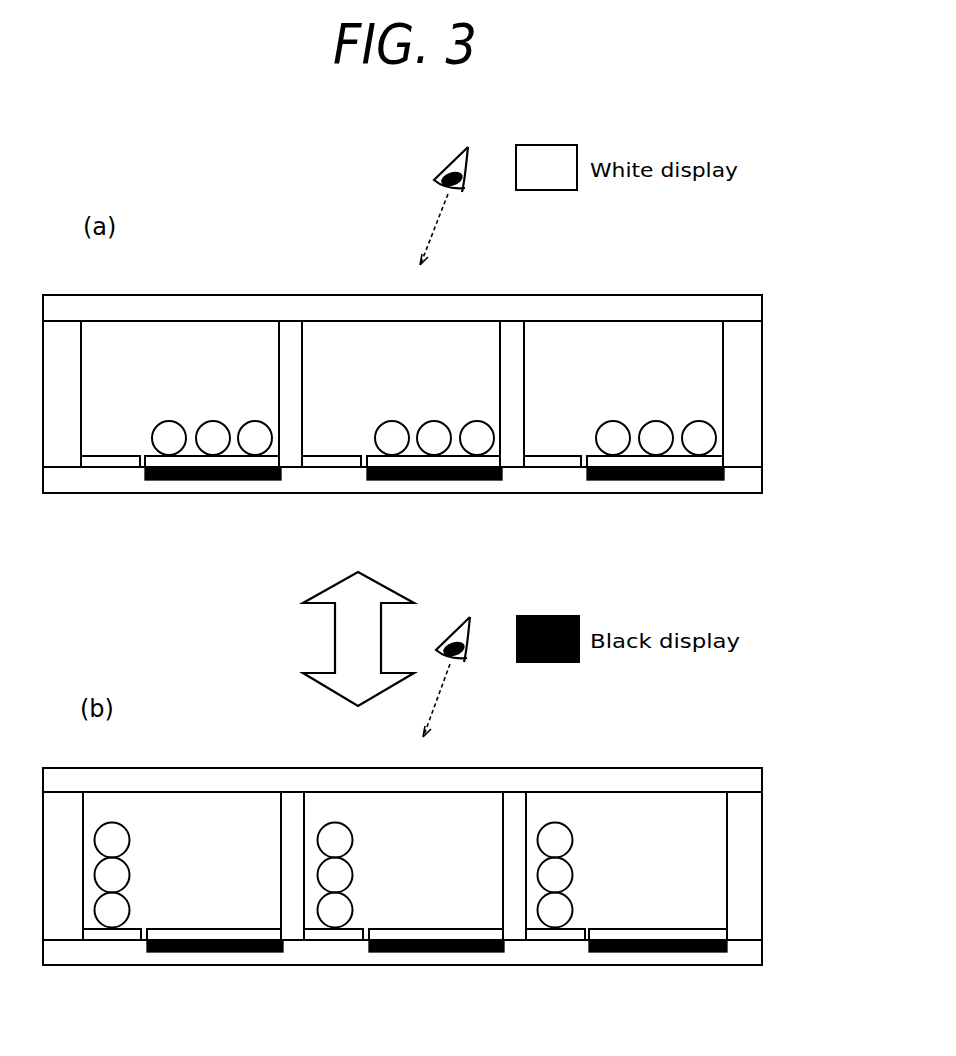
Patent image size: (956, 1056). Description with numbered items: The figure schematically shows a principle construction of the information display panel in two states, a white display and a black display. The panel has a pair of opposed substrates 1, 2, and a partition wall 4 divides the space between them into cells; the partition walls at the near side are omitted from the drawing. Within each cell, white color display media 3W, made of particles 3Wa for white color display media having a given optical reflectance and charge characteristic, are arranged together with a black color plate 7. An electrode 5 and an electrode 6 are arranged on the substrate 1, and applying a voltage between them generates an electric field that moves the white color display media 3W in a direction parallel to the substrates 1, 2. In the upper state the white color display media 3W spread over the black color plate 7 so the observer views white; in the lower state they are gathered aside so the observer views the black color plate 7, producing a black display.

The substrate 1 is at (553, 480).
The substrate 2 is at (625, 305).
The white color display media 3W is at (777, 422).
The particles for white color display media 3Wa is at (390, 427).
The partition wall 4 is at (62, 437).
The electrode 5 is at (112, 460).
The electrode 6 is at (185, 458).
The black color plate 7 is at (220, 482).